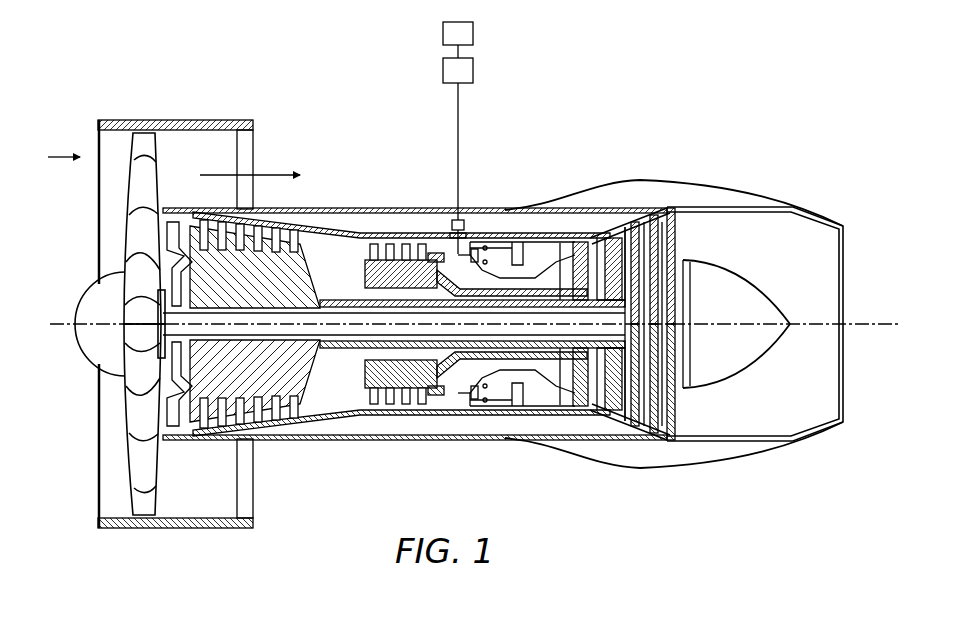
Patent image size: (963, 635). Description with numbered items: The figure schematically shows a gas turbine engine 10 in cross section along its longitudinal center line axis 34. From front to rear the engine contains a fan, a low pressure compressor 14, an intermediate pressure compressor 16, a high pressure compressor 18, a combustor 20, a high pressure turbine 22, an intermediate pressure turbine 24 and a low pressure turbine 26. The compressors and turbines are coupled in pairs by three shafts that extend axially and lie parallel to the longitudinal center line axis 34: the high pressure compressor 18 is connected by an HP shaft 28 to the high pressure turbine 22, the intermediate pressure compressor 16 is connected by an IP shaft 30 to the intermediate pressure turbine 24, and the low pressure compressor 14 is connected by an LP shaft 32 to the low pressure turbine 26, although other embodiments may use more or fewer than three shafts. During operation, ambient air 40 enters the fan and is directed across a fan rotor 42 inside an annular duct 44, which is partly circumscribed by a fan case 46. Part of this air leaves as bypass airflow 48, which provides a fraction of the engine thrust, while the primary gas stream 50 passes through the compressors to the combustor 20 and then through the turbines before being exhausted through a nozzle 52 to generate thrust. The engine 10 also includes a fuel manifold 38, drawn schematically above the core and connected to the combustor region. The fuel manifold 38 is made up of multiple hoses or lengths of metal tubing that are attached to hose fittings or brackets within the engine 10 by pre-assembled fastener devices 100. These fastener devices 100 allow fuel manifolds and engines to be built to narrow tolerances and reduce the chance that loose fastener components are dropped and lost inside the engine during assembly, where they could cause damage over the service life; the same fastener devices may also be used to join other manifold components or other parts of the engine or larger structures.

The gas turbine engine 10 is at (607, 53).
The low pressure compressor 14 is at (143, 500).
The intermediate pressure compressor 16 is at (272, 264).
The high pressure compressor 18 is at (405, 380).
The combustor 20 is at (496, 400).
The high pressure turbine 22 is at (580, 242).
The intermediate pressure turbine 24 is at (613, 238).
The low pressure turbine 26 is at (703, 220).
The HP shaft 28 is at (517, 362).
The IP shaft 30 is at (592, 390).
The LP shaft 32 is at (632, 400).
The longitudinal center line axis 34 is at (870, 318).
The fuel manifold 38 is at (476, 70).
The ambient air 40 is at (63, 156).
The fan rotor 42 is at (118, 256).
The annular duct 44 is at (238, 492).
The fan case 46 is at (190, 529).
The bypass airflow 48 is at (280, 176).
The primary gas stream 50 is at (362, 238).
The nozzle 52 is at (808, 207).
The pre-assembled fastener devices 100 is at (482, 33).